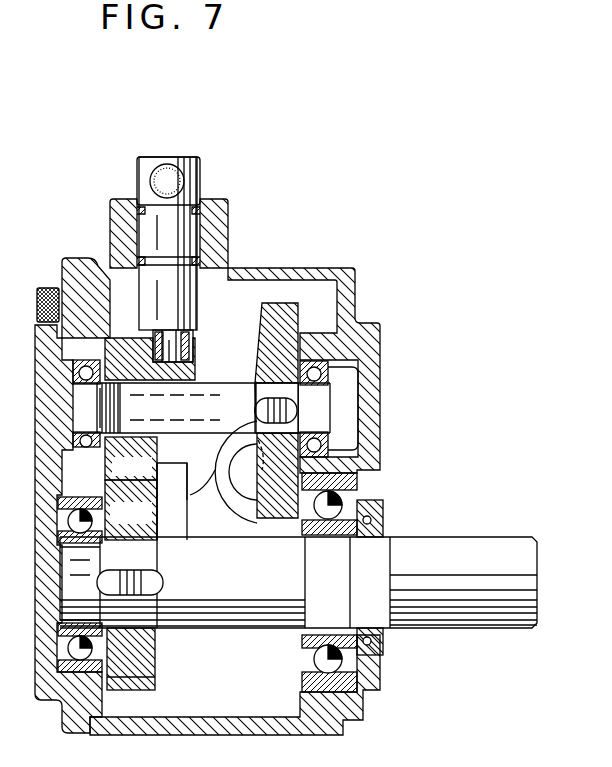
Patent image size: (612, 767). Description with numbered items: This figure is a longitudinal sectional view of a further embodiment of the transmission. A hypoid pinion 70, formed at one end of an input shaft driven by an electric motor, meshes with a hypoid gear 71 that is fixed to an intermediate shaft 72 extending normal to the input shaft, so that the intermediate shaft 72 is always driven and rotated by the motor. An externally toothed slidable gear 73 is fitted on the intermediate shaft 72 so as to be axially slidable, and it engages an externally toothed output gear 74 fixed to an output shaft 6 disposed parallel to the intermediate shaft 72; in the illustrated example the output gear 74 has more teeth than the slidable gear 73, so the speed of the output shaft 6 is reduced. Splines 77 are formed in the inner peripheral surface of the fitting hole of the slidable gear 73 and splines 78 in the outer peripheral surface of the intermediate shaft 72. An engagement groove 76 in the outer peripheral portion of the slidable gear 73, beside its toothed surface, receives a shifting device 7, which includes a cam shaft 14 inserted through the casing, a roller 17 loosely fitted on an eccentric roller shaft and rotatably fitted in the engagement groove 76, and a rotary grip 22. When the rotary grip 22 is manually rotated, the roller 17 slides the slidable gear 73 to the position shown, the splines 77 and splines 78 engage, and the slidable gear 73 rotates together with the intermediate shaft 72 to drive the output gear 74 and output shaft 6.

The output shaft 6 is at (474, 612).
The shifting device 7 is at (181, 146).
The cam shaft 14 is at (153, 157).
The roller 17 is at (190, 340).
The rotary grip 22 is at (187, 181).
The hypoid pinion 70 is at (242, 480).
The hypoid gear 71 is at (277, 291).
The intermediate shaft 72 is at (205, 384).
The externally toothed slidable gear 73 is at (120, 346).
The externally toothed output gear 74 is at (155, 684).
The engagement groove 76 is at (163, 470).
The splines 77 is at (118, 532).
The splines 78 is at (155, 480).